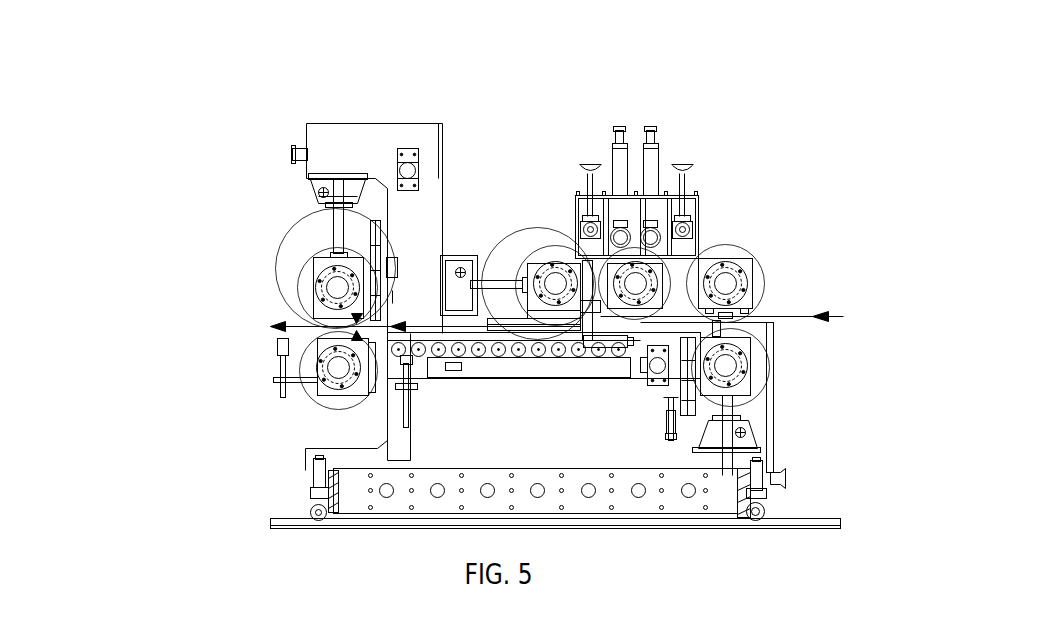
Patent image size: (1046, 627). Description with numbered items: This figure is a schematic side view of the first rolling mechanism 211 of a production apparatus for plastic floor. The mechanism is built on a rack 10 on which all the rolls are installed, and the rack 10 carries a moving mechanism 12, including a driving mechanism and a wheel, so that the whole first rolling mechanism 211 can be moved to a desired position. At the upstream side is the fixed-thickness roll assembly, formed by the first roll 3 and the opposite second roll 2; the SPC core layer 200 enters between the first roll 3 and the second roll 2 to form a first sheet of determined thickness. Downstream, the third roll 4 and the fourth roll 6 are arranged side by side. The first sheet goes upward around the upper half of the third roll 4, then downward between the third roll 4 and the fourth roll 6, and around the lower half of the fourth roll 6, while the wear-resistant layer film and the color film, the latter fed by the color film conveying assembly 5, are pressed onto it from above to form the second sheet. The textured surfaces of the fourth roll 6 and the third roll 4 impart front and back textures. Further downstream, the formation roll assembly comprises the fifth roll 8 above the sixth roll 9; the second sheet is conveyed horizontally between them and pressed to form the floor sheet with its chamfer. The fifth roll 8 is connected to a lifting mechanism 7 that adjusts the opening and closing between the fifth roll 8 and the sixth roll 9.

The first rolling mechanism 211 is at (232, 264).
The SPC core layer 200 is at (817, 315).
The second roll 2 is at (745, 350).
The first roll 3 is at (735, 267).
The third roll 4 is at (661, 277).
The color film conveying assembly 5 is at (670, 207).
The fourth roll 6 is at (555, 262).
The lifting mechanism 7 is at (340, 188).
The fifth roll 8 is at (313, 273).
The sixth roll 9 is at (332, 368).
The rack 10 is at (397, 433).
The moving mechanism 12 is at (782, 480).